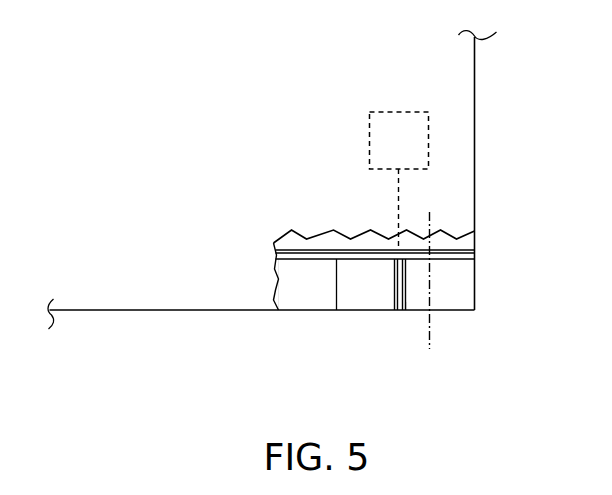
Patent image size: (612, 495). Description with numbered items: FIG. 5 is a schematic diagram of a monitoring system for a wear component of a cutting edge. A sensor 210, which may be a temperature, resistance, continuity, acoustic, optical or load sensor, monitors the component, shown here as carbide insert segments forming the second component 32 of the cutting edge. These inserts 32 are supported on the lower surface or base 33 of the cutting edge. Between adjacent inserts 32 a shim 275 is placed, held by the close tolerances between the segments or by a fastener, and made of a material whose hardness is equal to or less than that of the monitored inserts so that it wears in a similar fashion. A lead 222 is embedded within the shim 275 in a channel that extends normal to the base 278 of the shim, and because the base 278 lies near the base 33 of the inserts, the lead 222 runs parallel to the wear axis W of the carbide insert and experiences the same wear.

The sensor 210 is at (352, 105).
The shim 275 is at (378, 275).
The base of shim 278 is at (395, 312).
The lead 222 is at (398, 290).
The second component 32 is at (287, 287).
The base 33 is at (457, 310).
The wear axis W is at (430, 218).